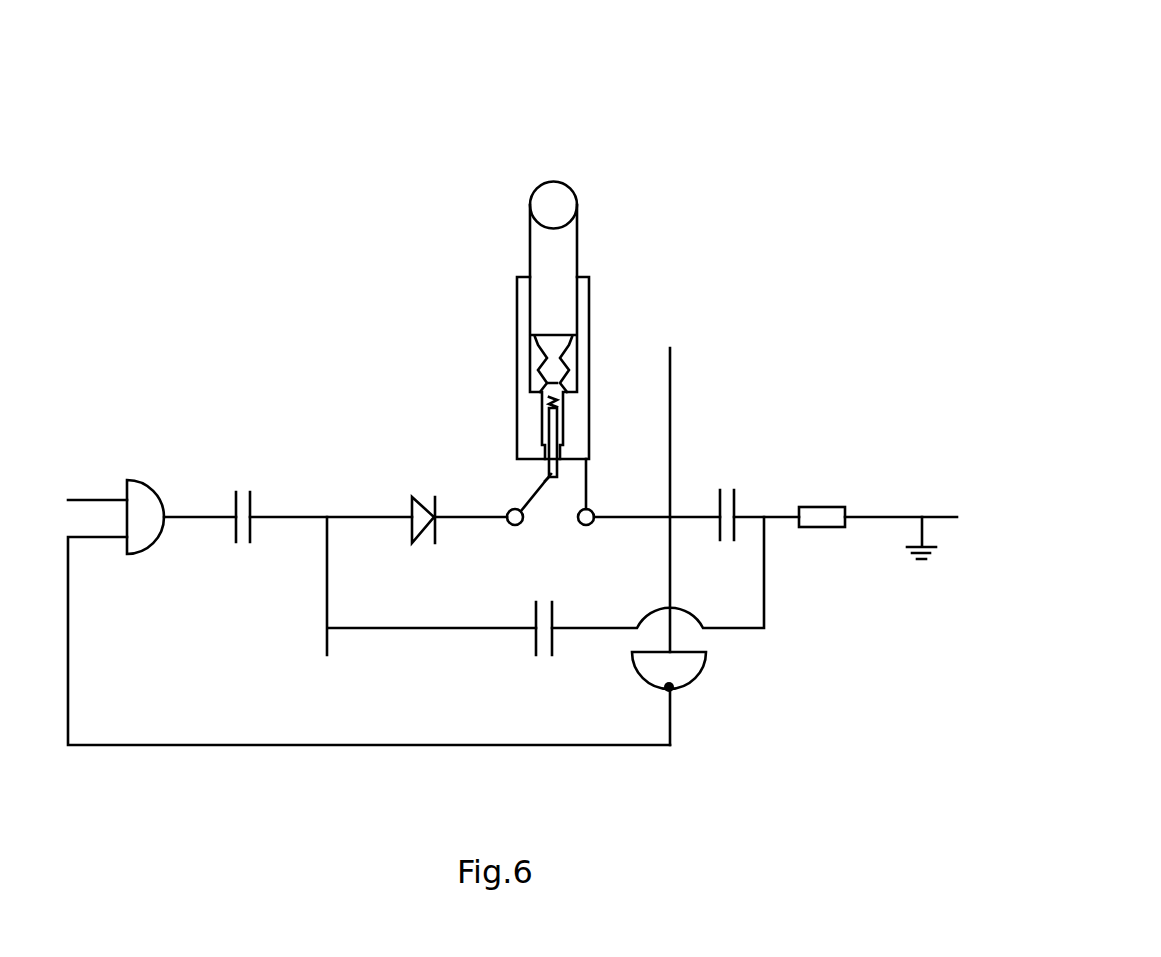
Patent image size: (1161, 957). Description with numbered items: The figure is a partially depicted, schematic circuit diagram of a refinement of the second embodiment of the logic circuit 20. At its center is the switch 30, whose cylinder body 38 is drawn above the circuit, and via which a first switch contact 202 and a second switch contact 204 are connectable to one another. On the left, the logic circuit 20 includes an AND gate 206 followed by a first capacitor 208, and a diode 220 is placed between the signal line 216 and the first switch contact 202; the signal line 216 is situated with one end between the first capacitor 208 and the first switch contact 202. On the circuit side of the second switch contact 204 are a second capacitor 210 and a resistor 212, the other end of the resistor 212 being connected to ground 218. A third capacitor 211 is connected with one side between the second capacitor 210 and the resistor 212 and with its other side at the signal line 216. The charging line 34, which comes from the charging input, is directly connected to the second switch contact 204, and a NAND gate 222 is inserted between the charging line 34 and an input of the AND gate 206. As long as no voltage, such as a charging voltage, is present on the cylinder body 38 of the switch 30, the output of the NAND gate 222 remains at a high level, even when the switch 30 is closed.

The logic circuit 20 is at (779, 48).
The switch 30 is at (649, 203).
The cylinder body 38 is at (589, 300).
The charging line 34 is at (672, 370).
The AND gate 206 is at (136, 486).
The first capacitor 208 is at (240, 490).
The diode 220 is at (422, 492).
The first switch contact 202 is at (511, 525).
The second switch contact 204 is at (585, 527).
The second capacitor 210 is at (727, 483).
The resistor 212 is at (820, 502).
The ground 218 is at (893, 513).
The signal line 216 is at (323, 642).
The third capacitor 211 is at (532, 643).
The NAND gate 222 is at (702, 667).